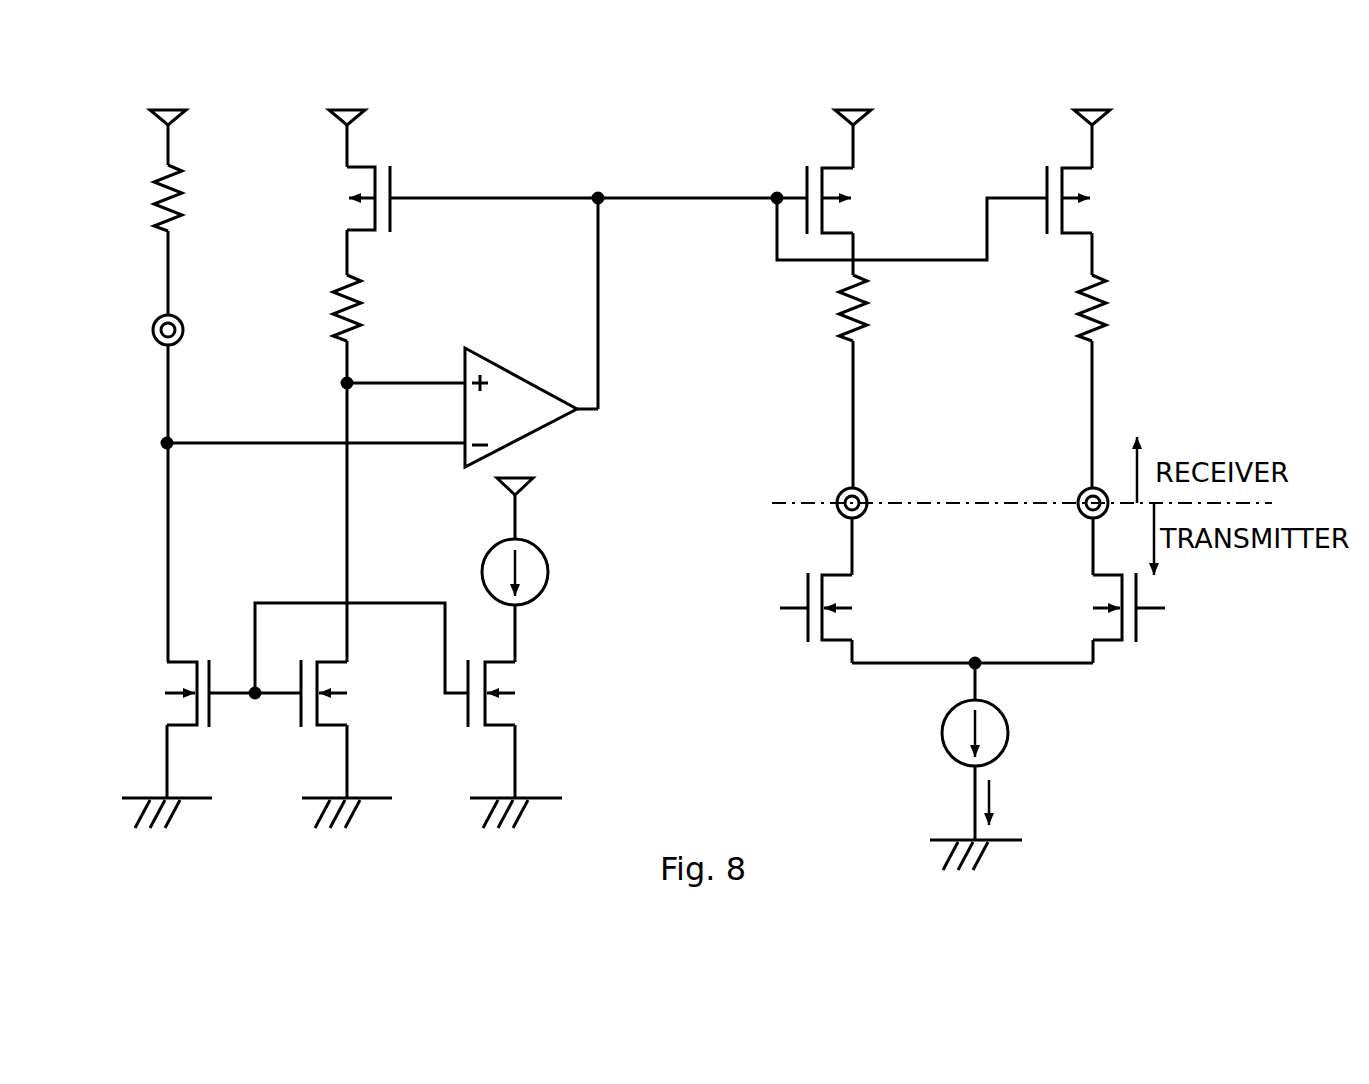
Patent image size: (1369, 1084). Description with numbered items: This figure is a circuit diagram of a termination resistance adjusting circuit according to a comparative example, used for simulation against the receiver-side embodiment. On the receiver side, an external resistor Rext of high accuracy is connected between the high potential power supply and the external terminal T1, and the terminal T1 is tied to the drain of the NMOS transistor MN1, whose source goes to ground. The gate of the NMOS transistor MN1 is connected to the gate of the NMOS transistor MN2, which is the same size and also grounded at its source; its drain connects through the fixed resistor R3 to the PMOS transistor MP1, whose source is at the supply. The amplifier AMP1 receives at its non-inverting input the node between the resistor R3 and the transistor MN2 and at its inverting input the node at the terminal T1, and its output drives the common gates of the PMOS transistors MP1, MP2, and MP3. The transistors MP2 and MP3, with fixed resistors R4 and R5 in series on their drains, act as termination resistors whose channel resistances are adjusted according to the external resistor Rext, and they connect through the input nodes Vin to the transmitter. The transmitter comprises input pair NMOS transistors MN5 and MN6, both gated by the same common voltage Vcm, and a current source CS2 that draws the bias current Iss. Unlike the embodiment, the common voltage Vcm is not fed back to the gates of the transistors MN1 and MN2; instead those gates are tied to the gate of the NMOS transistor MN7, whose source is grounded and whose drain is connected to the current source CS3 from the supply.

The external resistor Rext is at (156, 205).
The external terminal T1 is at (146, 488).
The PMOS transistor MP1 is at (331, 192).
The fixed resistor R3 is at (367, 329).
The amplifier AMP1 is at (478, 356).
The PMOS transistor MP2 is at (863, 192).
The PMOS transistor MP3 is at (1104, 192).
The fixed resistor R4 is at (875, 381).
The fixed resistor R5 is at (1114, 381).
The input Vin is at (972, 519).
The NMOS transistor MN5 is at (864, 618).
The NMOS transistor MN6 is at (1082, 618).
The common voltage Vcm is at (976, 607).
The current source CS2 is at (1008, 731).
The bias current Iss is at (1011, 802).
The NMOS transistor MN1 is at (154, 744).
The NMOS transistor MN2 is at (360, 744).
The NMOS transistor MN7 is at (528, 744).
The current source CS3 is at (548, 572).